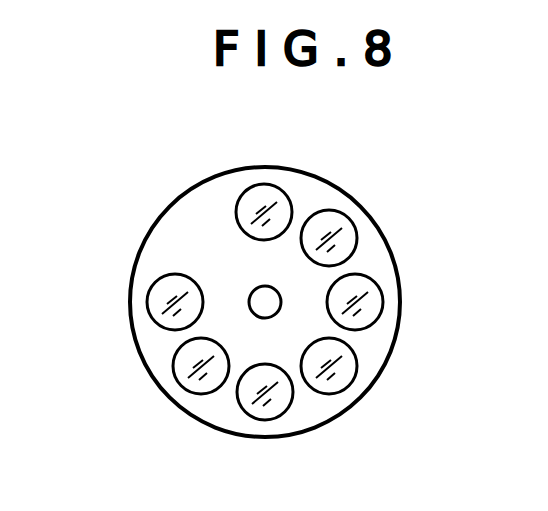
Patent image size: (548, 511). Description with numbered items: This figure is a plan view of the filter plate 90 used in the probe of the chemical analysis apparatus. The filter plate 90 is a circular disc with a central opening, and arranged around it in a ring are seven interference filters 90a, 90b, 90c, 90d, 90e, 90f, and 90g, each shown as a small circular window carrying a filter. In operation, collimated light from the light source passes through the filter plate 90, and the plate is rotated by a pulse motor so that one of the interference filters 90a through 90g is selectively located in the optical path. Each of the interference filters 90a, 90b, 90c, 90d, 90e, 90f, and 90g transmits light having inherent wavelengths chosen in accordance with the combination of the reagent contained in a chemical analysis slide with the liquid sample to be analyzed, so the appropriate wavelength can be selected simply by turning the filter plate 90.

The filter plate 90 is at (343, 166).
The interference filter 90a is at (262, 200).
The interference filter 90b is at (345, 228).
The interference filter 90c is at (367, 298).
The interference filter 90d is at (345, 380).
The interference filter 90e is at (266, 397).
The interference filter 90f is at (204, 375).
The interference filter 90g is at (168, 313).